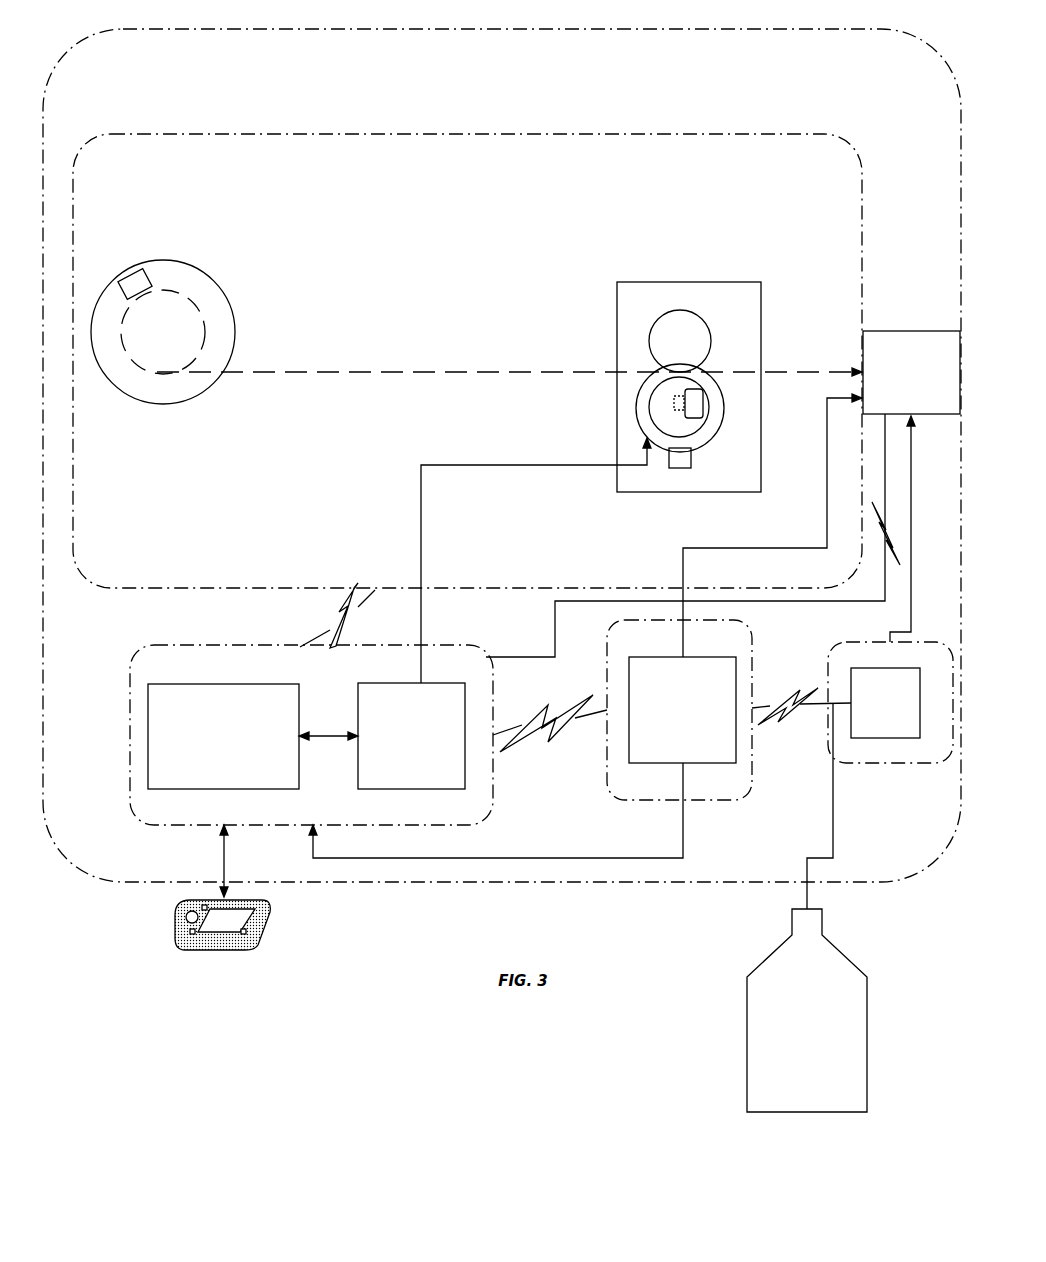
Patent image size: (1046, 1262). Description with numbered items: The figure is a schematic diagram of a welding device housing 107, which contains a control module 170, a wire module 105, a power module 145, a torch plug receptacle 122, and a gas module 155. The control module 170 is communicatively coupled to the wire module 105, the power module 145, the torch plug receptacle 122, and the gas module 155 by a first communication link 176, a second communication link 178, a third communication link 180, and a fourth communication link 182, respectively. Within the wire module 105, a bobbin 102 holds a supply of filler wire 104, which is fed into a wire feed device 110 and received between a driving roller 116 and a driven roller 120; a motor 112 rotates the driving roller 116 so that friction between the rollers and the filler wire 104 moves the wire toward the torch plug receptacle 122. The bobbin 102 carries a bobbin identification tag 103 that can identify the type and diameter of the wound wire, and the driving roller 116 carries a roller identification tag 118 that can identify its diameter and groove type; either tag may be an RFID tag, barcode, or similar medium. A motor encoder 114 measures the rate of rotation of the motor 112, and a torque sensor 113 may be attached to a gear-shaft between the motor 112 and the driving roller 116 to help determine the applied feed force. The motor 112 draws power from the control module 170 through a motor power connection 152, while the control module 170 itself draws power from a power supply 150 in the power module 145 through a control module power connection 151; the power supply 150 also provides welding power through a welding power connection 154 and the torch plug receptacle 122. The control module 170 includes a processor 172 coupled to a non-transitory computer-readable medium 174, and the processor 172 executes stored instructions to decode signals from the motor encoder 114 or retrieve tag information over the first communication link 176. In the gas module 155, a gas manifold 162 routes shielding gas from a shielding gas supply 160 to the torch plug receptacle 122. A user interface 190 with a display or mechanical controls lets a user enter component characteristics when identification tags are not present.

The welding device housing 107 is at (502, 445).
The wire module 105 is at (467, 349).
The bobbin 102 is at (216, 276).
The bobbin identification tag 103 is at (130, 264).
The filler wire 104 is at (368, 364).
The wire feed device 110 is at (688, 274).
The driven roller 120 is at (640, 337).
The motor 112 is at (626, 403).
The driving roller 116 is at (704, 370).
The roller identification tag 118 is at (708, 411).
The torque sensor 113 is at (665, 406).
The motor encoder 114 is at (678, 478).
The torch plug receptacle 122 is at (911, 372).
The motor power connection 152 is at (411, 506).
The welding power connection 154 is at (819, 468).
The third communication link 180 is at (547, 608).
The control module 170 is at (133, 650).
The non-transitory computer-readable medium 174 is at (223, 736).
The processor 172 is at (411, 736).
The first communication link 176 is at (334, 617).
The second communication link 178 is at (529, 746).
The power module 145 is at (727, 811).
The power supply 150 is at (682, 710).
The control module power connection 151 is at (655, 847).
The gas module 155 is at (890, 773).
The gas manifold 162 is at (885, 703).
The fourth communication link 182 is at (783, 729).
The shielding gas supply 160 is at (807, 1010).
The user interface 190 is at (170, 913).